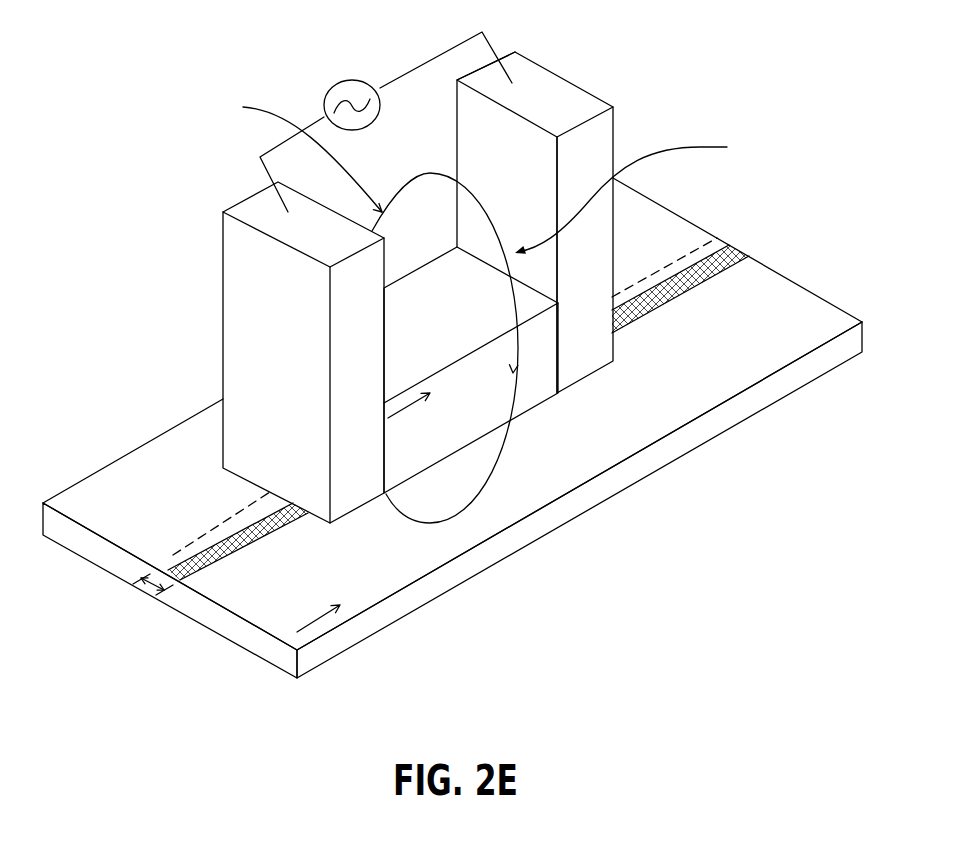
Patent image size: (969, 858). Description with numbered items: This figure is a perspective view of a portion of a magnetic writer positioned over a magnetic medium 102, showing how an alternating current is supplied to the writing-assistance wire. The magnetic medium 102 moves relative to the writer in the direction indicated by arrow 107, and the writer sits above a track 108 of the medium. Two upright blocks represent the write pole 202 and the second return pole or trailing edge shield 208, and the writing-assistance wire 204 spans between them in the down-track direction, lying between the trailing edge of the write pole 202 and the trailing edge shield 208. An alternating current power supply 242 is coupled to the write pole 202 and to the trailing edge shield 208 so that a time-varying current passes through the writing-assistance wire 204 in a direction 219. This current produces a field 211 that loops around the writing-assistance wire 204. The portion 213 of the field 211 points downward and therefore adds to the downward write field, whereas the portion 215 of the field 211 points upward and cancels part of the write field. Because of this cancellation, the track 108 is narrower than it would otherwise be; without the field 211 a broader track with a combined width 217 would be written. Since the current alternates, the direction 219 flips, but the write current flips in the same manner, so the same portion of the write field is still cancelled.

The magnetic medium 102 is at (767, 297).
The arrow 107 is at (335, 620).
The track 108 is at (172, 555).
The write pole 202 is at (240, 262).
The writing-assistance wire 204 is at (432, 284).
The second return pole or trailing edge shield 208 is at (598, 145).
The field 211 is at (639, 194).
The portion of field 213 is at (513, 373).
The portion of field 215 is at (293, 153).
The combined width 217 is at (145, 592).
The direction 219 is at (405, 408).
The alternating current power supply 242 is at (353, 80).